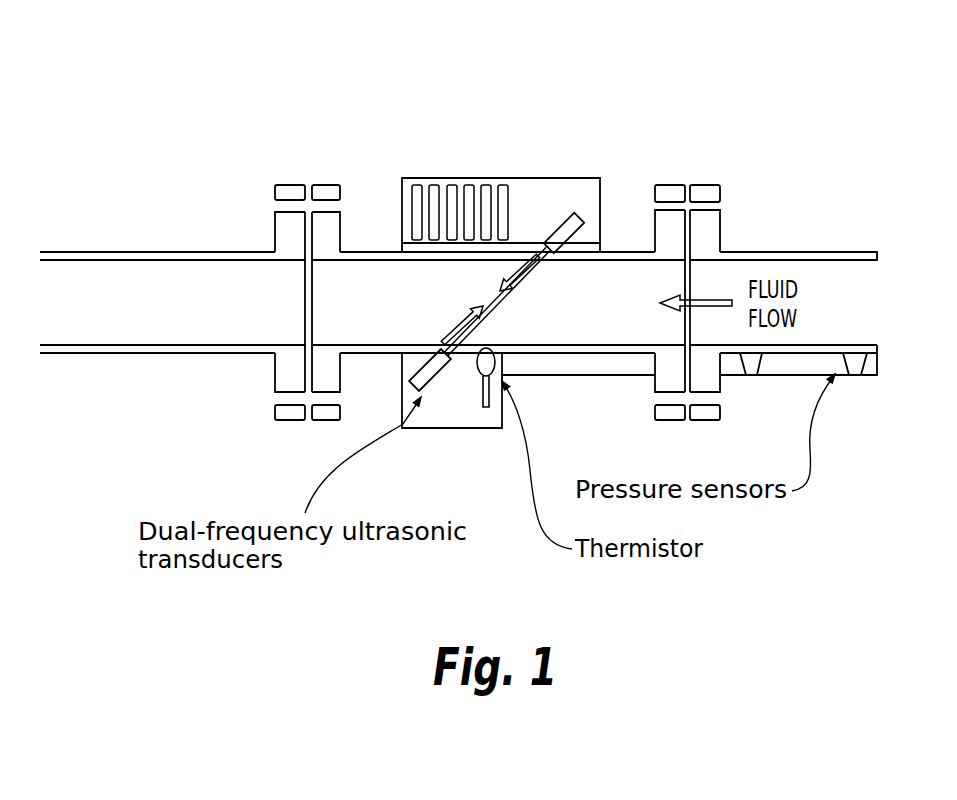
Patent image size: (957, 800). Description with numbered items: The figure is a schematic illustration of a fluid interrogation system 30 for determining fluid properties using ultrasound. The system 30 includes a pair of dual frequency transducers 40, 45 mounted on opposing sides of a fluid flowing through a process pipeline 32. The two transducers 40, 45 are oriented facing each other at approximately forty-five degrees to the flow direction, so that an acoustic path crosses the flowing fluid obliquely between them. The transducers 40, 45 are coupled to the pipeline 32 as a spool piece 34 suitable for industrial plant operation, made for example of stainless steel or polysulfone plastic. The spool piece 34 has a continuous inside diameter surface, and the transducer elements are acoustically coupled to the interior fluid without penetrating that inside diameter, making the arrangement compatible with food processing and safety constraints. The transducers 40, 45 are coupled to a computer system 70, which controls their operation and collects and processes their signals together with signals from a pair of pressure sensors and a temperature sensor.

The fluid interrogation system 30 is at (277, 97).
The process pipeline 32 is at (800, 252).
The spool piece 34 is at (362, 252).
The dual frequency transducer 40 is at (579, 214).
The dual frequency transducer 45 is at (440, 378).
The computer system 70 is at (515, 178).